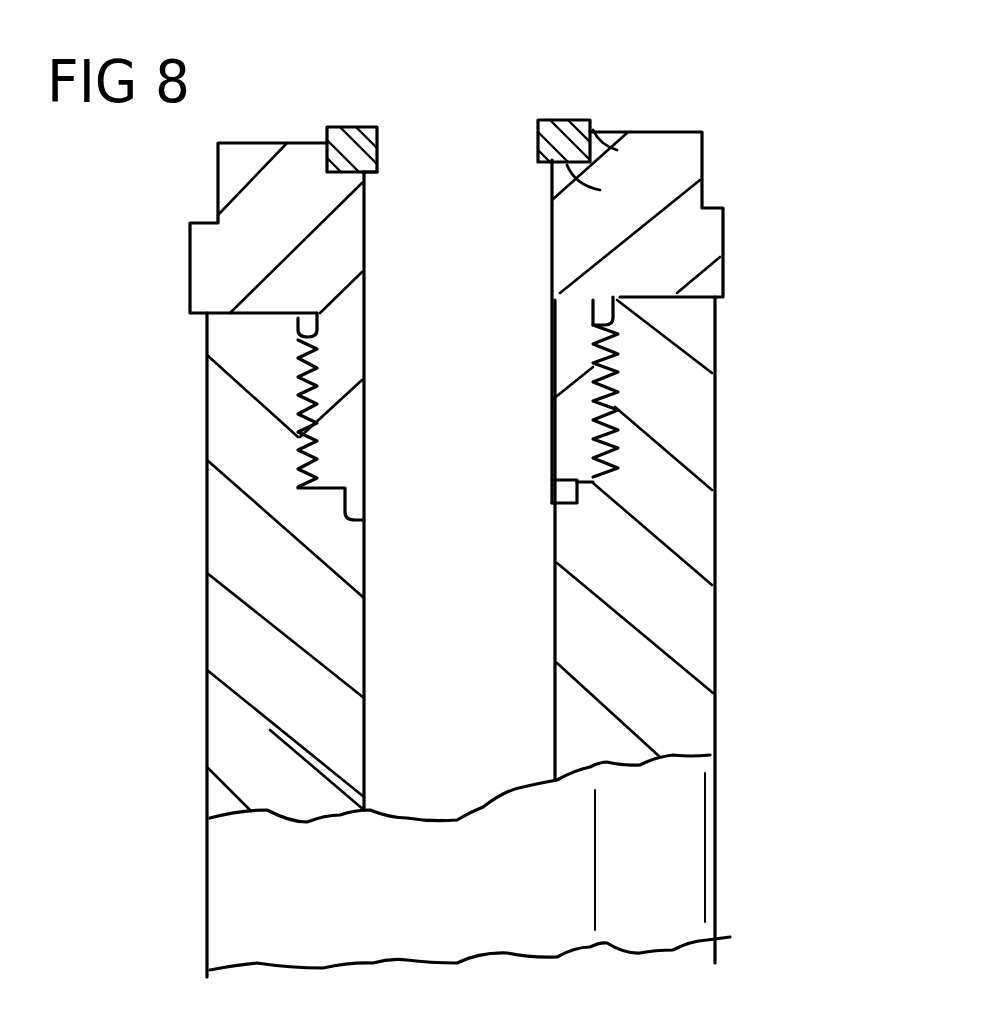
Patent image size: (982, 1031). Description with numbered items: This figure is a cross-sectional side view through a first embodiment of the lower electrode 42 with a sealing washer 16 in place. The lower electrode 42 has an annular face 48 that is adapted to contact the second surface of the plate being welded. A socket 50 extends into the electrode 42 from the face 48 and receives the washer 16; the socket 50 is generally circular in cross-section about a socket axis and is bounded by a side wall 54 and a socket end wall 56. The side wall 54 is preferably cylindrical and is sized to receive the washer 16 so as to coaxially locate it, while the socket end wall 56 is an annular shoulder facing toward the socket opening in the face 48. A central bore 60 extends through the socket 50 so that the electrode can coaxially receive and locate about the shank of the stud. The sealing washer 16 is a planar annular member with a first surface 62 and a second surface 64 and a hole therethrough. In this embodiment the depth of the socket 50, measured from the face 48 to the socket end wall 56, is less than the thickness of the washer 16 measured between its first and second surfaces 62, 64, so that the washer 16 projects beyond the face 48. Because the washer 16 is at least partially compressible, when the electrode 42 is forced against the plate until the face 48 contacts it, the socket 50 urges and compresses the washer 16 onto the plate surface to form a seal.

The sealing washer 16 is at (567, 118).
The lower electrode 42 is at (863, 368).
The annular face 48 is at (663, 130).
The socket 50 is at (358, 33).
The side wall 54 is at (593, 130).
The socket end wall 56 is at (567, 165).
The central bore 60 is at (492, 620).
The first surface of the washer 62 is at (360, 120).
The second surface of the washer 64 is at (365, 170).